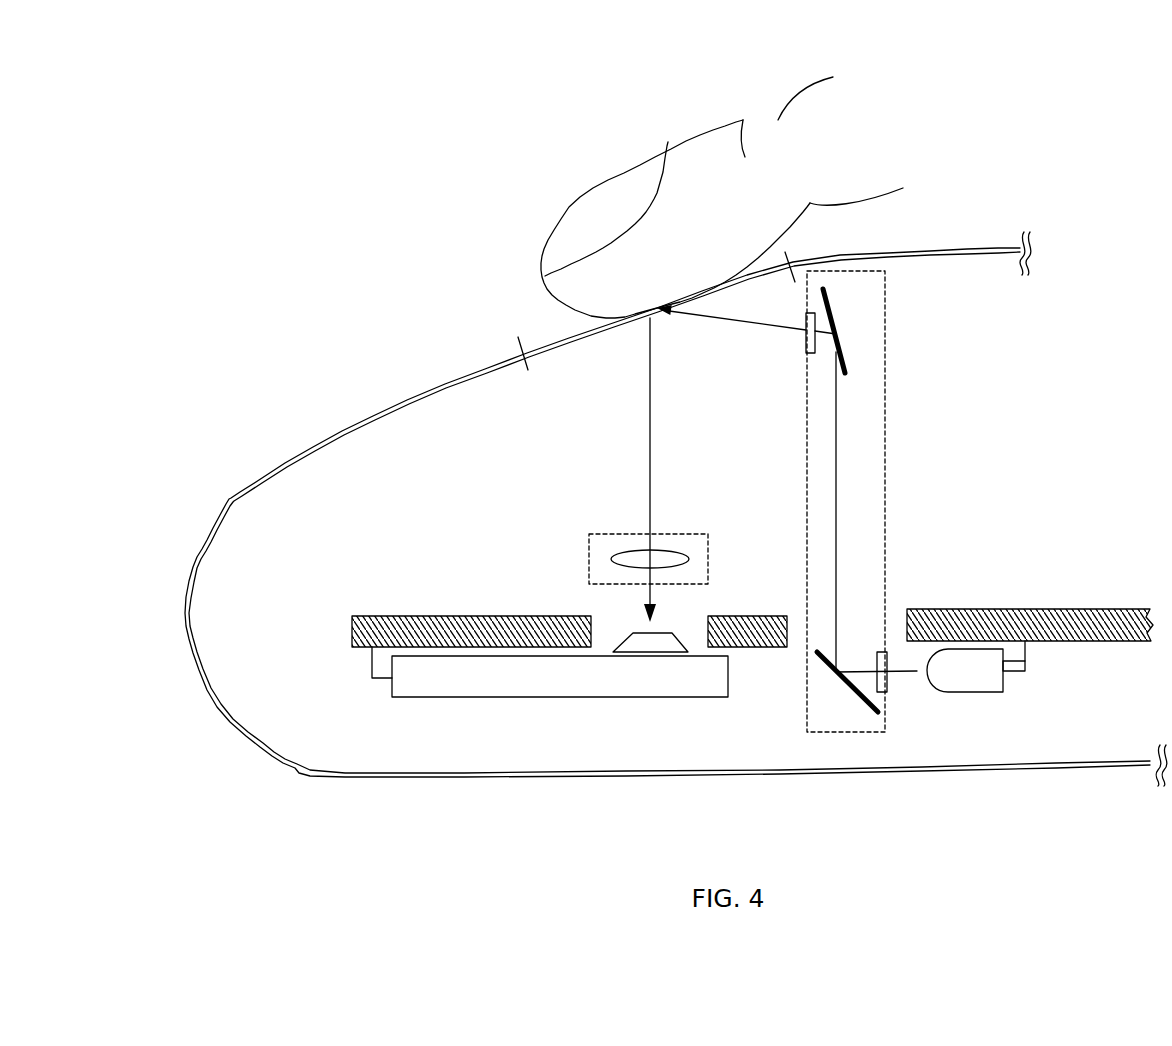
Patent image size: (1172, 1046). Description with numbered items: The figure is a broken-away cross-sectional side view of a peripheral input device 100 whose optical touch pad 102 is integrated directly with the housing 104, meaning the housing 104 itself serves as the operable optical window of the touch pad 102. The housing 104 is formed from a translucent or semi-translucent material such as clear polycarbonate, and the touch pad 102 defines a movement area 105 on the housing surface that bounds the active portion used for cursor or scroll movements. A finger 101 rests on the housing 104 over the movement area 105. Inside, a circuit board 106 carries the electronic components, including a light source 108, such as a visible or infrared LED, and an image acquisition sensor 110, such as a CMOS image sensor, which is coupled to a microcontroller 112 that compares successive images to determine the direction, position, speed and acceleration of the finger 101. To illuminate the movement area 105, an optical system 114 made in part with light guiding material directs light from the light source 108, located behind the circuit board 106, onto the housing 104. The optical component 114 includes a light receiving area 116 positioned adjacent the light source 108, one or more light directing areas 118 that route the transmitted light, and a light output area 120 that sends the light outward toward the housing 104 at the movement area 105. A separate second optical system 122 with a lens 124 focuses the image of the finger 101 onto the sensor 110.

The peripheral input device 100 is at (302, 198).
The finger 101 is at (743, 120).
The optical touch pad 102 is at (998, 392).
The housing 104 is at (312, 447).
The movement area 105 is at (520, 352).
The circuit board 106 is at (1053, 608).
The light source 108 is at (995, 680).
The image acquisition sensor 110 is at (633, 633).
The microcontroller 112 is at (602, 697).
The optical system 114 is at (886, 497).
The light receiving area 116 is at (890, 680).
The light directing areas 118 is at (848, 355).
The light output area 120 is at (806, 347).
The second optical system 122 is at (602, 534).
The lens 124 is at (668, 552).